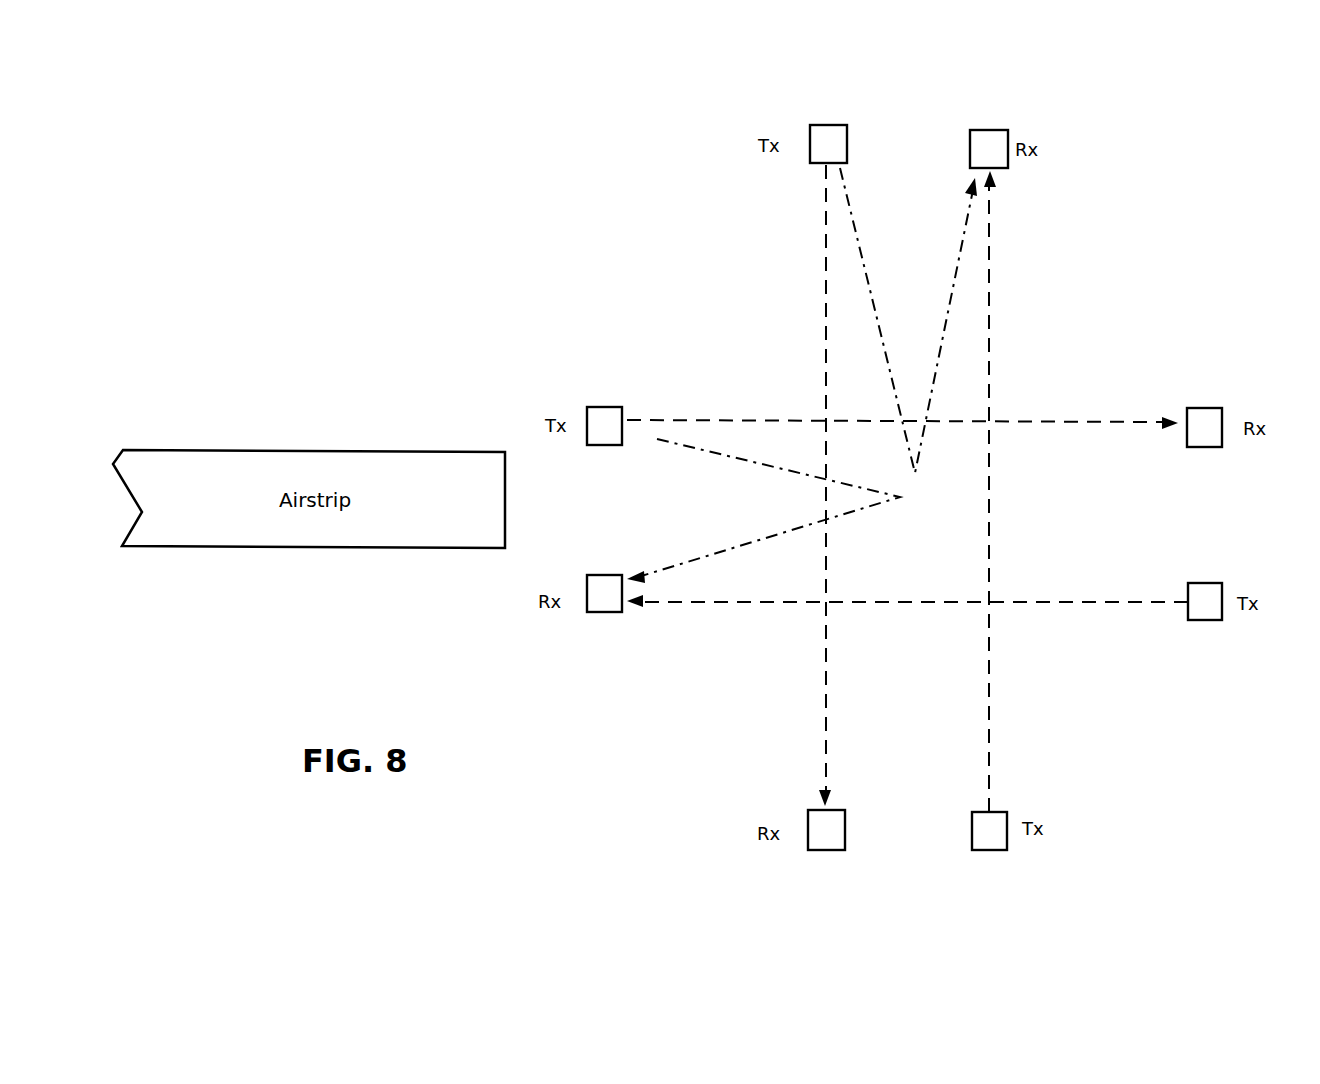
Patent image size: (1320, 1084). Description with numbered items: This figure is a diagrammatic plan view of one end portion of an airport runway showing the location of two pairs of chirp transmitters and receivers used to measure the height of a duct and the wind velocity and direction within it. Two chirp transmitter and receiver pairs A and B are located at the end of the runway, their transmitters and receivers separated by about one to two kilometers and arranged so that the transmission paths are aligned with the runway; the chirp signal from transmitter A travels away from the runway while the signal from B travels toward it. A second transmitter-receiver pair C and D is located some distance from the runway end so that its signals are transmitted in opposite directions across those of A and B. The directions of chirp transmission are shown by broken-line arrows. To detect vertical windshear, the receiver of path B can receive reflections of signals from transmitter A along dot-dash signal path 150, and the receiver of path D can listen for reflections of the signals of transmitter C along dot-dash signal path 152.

The signal path 150 is at (730, 460).
The signal path 152 is at (941, 352).
The chirp transmitter and receiver pair A is at (904, 427).
The chirp transmitter and receiver pair B is at (904, 597).
The chirp transmitter and receiver pair C is at (827, 487).
The chirp transmitter and receiver pair D is at (989, 490).